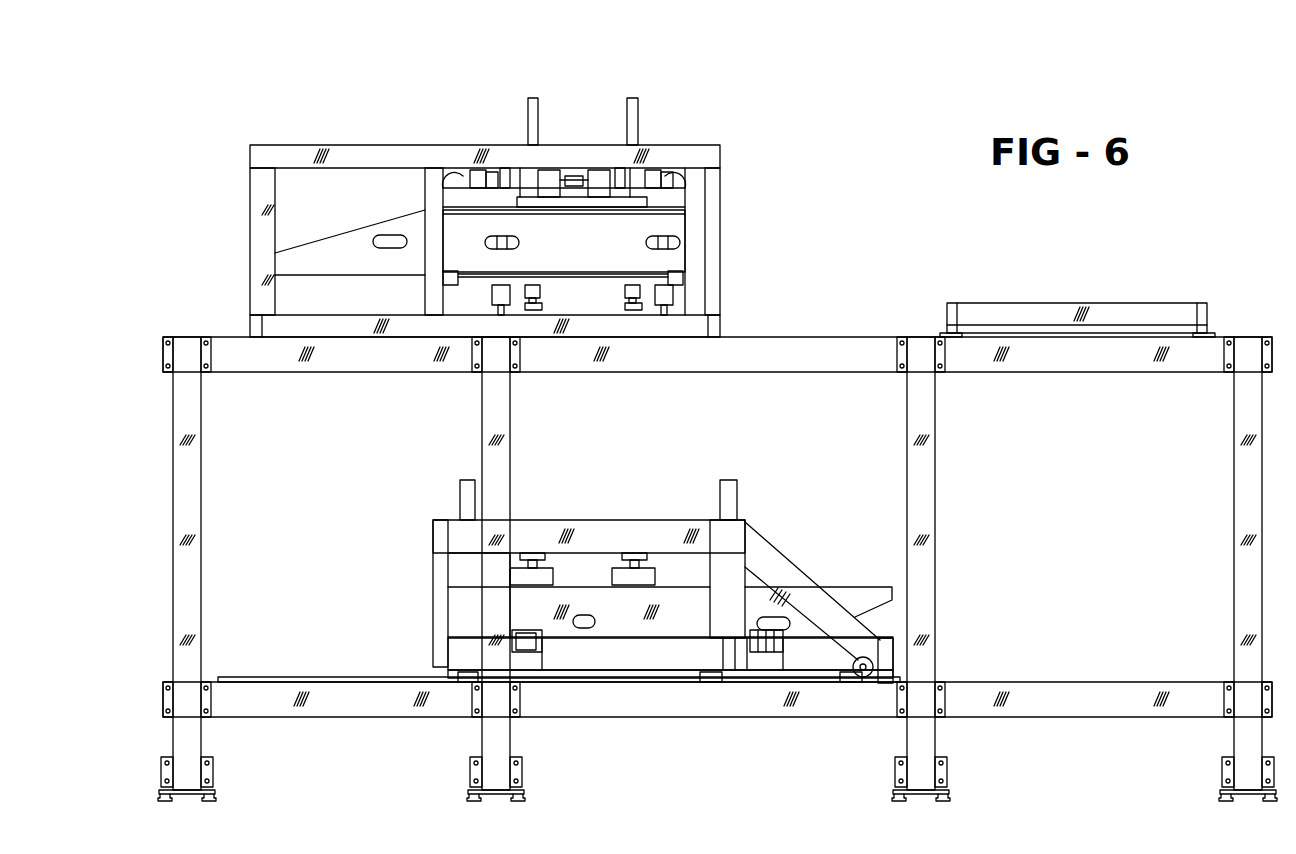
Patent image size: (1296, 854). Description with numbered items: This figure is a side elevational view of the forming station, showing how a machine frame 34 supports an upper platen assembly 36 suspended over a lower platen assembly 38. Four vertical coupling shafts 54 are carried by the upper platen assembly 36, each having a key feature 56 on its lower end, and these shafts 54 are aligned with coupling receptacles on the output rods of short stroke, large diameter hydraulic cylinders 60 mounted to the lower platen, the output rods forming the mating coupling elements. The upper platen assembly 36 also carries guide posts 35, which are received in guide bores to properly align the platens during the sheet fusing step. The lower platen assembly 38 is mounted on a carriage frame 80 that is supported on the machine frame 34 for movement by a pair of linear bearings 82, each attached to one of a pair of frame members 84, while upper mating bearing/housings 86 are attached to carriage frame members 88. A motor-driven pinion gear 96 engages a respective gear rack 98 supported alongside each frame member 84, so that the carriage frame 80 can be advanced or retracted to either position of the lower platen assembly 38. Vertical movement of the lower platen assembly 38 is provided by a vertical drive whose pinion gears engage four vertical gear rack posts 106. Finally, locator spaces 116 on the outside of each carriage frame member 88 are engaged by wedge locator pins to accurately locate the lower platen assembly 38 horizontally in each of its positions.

The machine frame 34 is at (150, 475).
The guide posts 35 is at (683, 307).
The upper platen assembly 36 is at (670, 224).
The lower platen assembly 38 is at (778, 542).
The shafts 54 is at (627, 127).
The key feature 56 is at (628, 290).
The hydraulic cylinder 60 is at (505, 577).
The carriage frame 80 is at (426, 652).
The linear bearings 82 is at (270, 678).
The frame members 84 is at (345, 710).
The upper mating bearing/housings 86 is at (467, 680).
The carriage frame members 88 is at (571, 662).
The pinion gear 96 is at (875, 676).
The gear rack 98 is at (772, 680).
The vertical gear rack posts 106 is at (465, 495).
The locator spaces 116 is at (529, 630).